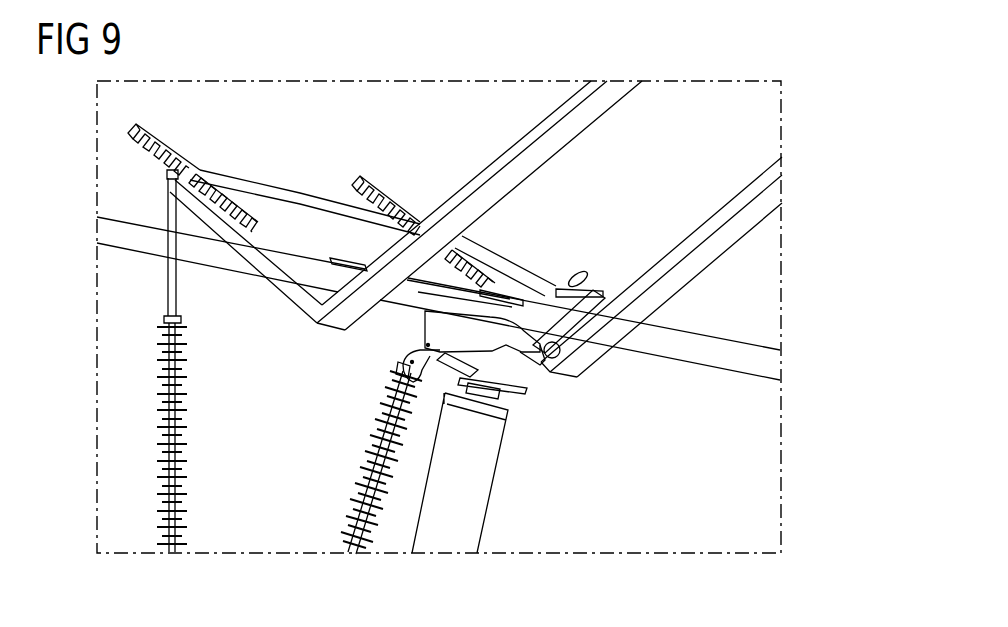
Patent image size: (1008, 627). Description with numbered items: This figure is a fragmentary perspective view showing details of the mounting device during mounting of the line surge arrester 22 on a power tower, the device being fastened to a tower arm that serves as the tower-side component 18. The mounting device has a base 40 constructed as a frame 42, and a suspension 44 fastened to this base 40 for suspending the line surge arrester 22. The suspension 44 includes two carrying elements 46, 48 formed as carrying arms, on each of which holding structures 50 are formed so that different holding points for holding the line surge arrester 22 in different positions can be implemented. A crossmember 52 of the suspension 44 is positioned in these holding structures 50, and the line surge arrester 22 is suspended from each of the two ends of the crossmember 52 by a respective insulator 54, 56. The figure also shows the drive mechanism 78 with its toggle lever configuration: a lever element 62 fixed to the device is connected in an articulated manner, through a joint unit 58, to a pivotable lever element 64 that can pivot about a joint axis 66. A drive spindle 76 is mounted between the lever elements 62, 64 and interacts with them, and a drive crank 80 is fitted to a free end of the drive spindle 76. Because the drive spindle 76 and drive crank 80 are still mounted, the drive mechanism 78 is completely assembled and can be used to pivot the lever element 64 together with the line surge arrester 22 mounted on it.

The tower-side component 18 is at (752, 357).
The line surge arrester 22 is at (492, 512).
The base 40 is at (605, 205).
The frame 42 is at (782, 192).
The suspension 44 is at (301, 179).
The carrying element 46 is at (383, 176).
The carrying element 48 is at (163, 173).
The holding structures 50 is at (180, 134).
The crossmember 52 is at (255, 190).
The insulator 54 is at (357, 517).
The insulator 56 is at (163, 494).
The joint unit 58 is at (388, 372).
The lever element 62 is at (530, 403).
The pivotable lever element 64 is at (492, 382).
The joint axis 66 is at (410, 347).
The drive spindle 76 is at (547, 345).
The drive mechanism 78 is at (542, 366).
The drive crank 80 is at (593, 289).